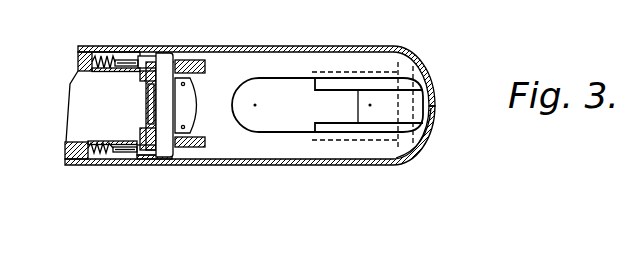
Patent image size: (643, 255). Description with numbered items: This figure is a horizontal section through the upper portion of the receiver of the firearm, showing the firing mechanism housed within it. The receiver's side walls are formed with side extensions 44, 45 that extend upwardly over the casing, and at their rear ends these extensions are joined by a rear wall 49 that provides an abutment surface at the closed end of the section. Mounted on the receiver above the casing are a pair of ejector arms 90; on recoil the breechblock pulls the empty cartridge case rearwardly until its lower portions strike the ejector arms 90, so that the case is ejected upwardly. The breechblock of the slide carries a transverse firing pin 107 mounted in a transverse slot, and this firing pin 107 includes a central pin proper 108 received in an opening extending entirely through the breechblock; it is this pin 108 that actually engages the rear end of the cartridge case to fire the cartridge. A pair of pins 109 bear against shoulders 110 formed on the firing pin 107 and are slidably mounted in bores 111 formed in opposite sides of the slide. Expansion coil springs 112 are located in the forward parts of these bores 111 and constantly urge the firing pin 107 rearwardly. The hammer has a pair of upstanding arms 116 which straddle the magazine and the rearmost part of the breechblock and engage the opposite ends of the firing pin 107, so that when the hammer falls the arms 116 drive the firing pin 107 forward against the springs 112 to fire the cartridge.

The side extension 44 is at (345, 46).
The side extension 45 is at (330, 165).
The rear wall 49 is at (430, 130).
The ejector arms 90 is at (318, 92).
The firing pin 107 is at (158, 89).
The central pin proper 108 is at (146, 106).
The pins 109 is at (148, 60).
The shoulders 110 is at (172, 58).
The bores 111 is at (139, 56).
The expansion coil springs 112 is at (106, 55).
The arms 116 is at (206, 70).